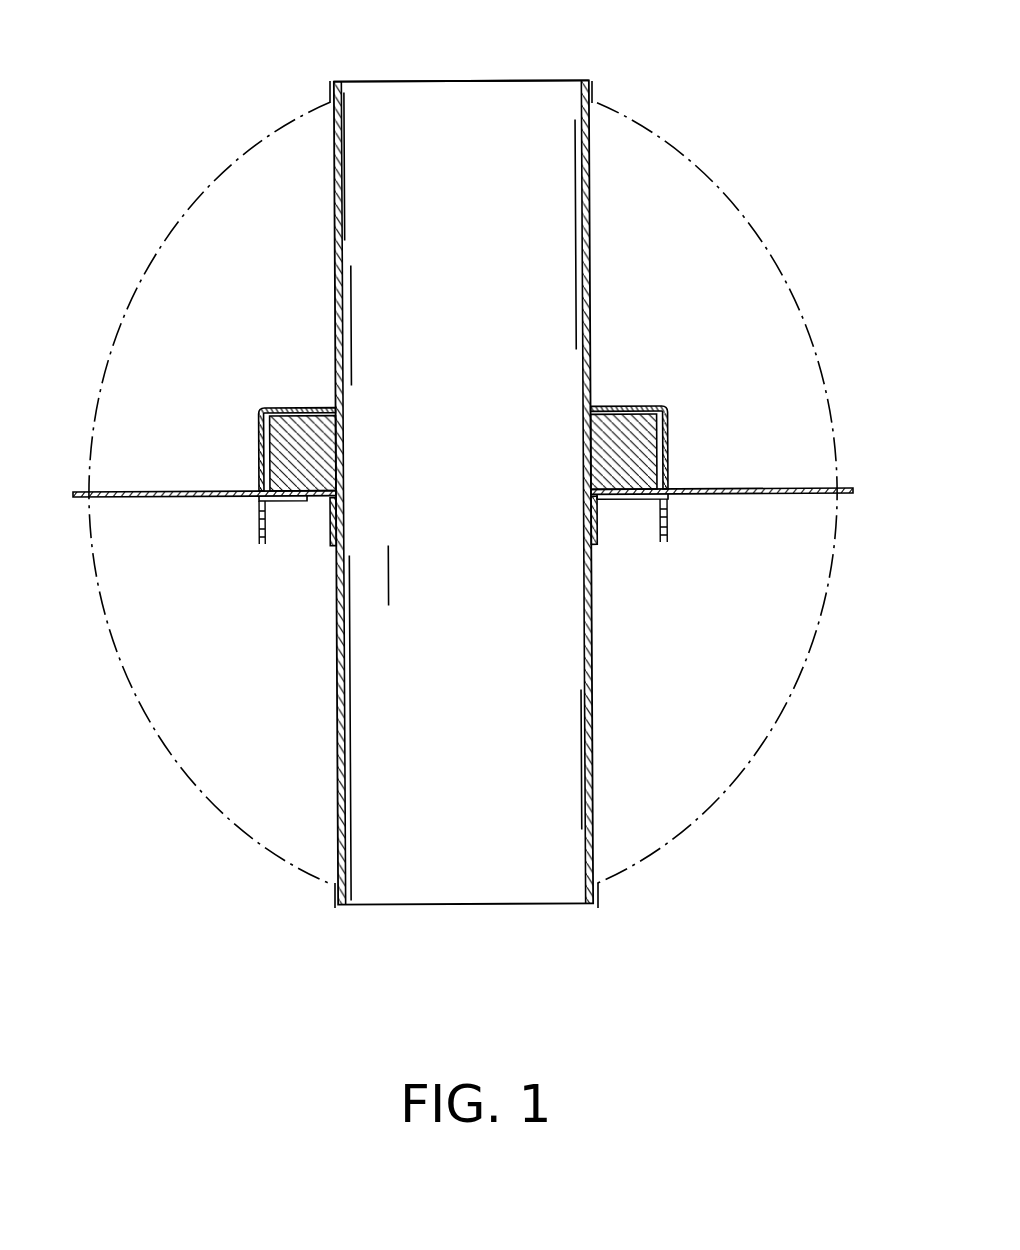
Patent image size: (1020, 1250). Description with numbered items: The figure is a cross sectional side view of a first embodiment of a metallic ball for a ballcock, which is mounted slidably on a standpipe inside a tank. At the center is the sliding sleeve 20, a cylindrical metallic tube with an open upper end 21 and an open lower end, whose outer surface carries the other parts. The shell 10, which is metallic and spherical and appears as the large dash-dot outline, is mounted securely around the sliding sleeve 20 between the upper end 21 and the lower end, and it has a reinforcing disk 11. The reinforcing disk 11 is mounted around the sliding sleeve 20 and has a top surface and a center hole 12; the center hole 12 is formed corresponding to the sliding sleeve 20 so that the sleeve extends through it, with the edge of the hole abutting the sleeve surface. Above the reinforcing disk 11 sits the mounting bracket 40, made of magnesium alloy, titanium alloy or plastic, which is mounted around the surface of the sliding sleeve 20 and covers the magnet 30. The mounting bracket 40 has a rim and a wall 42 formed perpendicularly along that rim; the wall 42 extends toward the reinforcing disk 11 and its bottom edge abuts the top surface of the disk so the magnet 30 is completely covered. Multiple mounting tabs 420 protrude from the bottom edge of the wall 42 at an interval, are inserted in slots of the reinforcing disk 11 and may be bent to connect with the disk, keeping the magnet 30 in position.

The shell 10 is at (725, 200).
The reinforcing disk 11 is at (817, 489).
The center hole 12 is at (336, 517).
The sliding sleeve 20 is at (590, 202).
The upper end 21 is at (468, 81).
The magnet 30 is at (623, 460).
The mounting bracket 40 is at (630, 406).
The wall 42 is at (262, 437).
The mounting tabs 420 is at (288, 502).